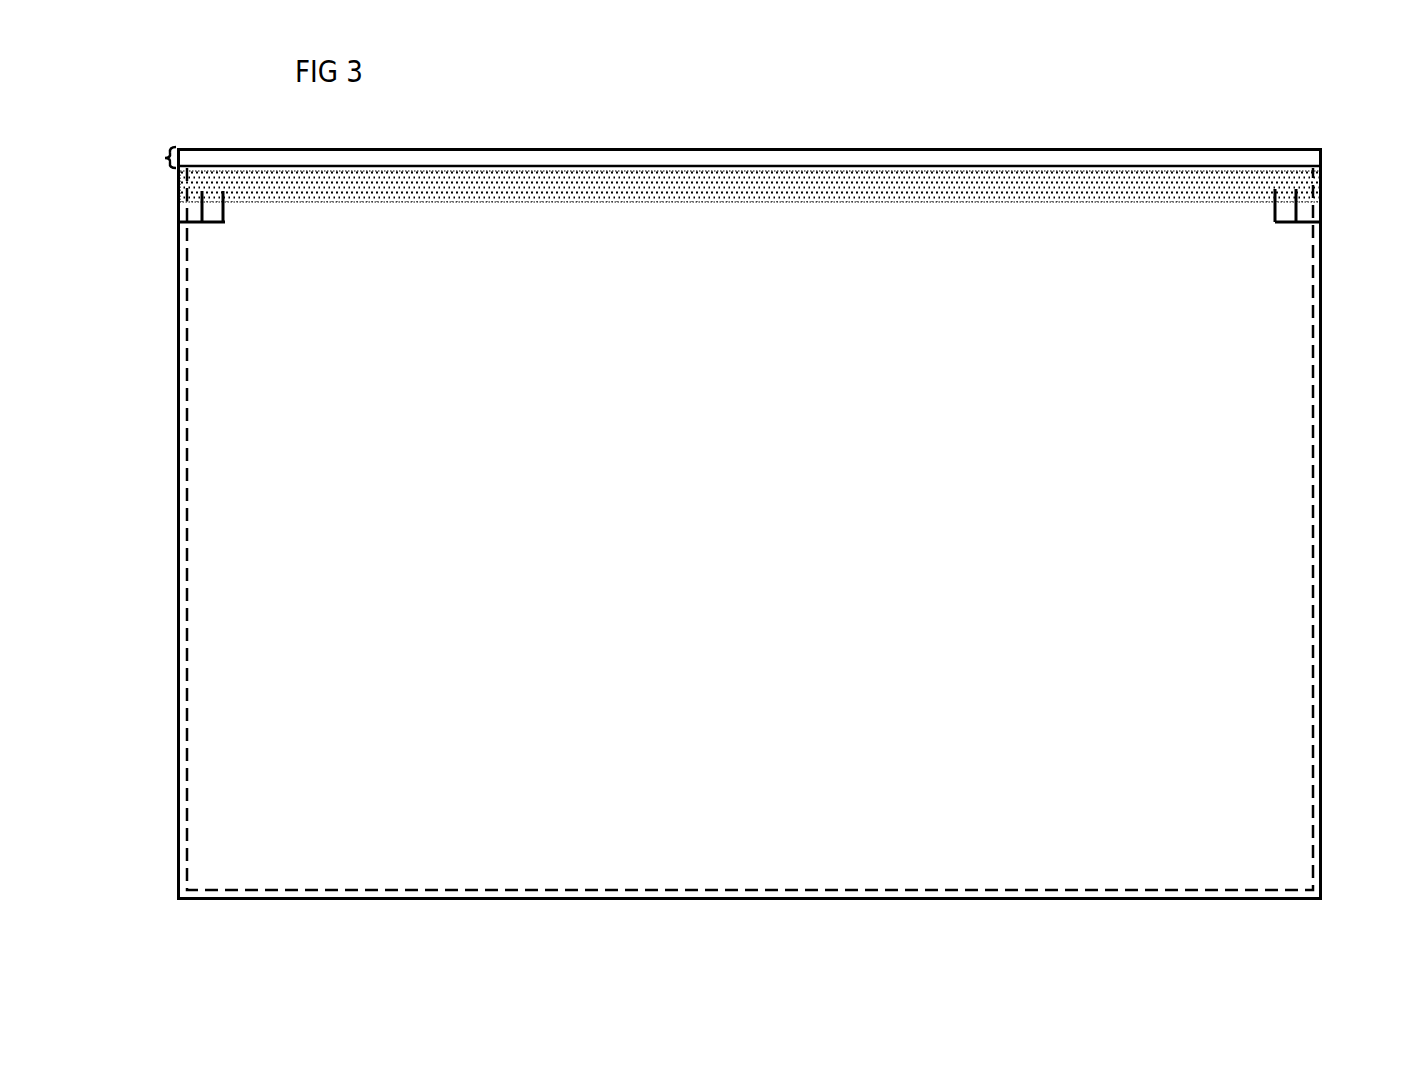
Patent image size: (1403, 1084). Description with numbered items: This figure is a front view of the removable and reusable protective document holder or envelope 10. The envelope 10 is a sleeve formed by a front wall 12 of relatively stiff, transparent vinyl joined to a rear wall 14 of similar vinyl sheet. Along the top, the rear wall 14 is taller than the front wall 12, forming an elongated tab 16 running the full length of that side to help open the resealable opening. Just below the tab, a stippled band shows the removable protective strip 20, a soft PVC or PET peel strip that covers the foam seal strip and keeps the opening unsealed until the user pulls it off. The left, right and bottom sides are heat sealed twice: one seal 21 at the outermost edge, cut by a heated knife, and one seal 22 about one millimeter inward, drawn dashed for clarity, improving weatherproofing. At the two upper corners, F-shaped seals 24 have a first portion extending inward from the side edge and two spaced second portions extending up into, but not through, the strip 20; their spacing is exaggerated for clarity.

The protective envelope 10 is at (1115, 88).
The front wall 12 is at (215, 670).
The rear wall 14 is at (1285, 153).
The tab 16 is at (168, 148).
The removable protective strip 20 is at (727, 188).
The seal at outermost edge 21 is at (175, 815).
The seal about 1 mm from edge 22 is at (1312, 578).
The F-shaped seal 24 is at (223, 222).